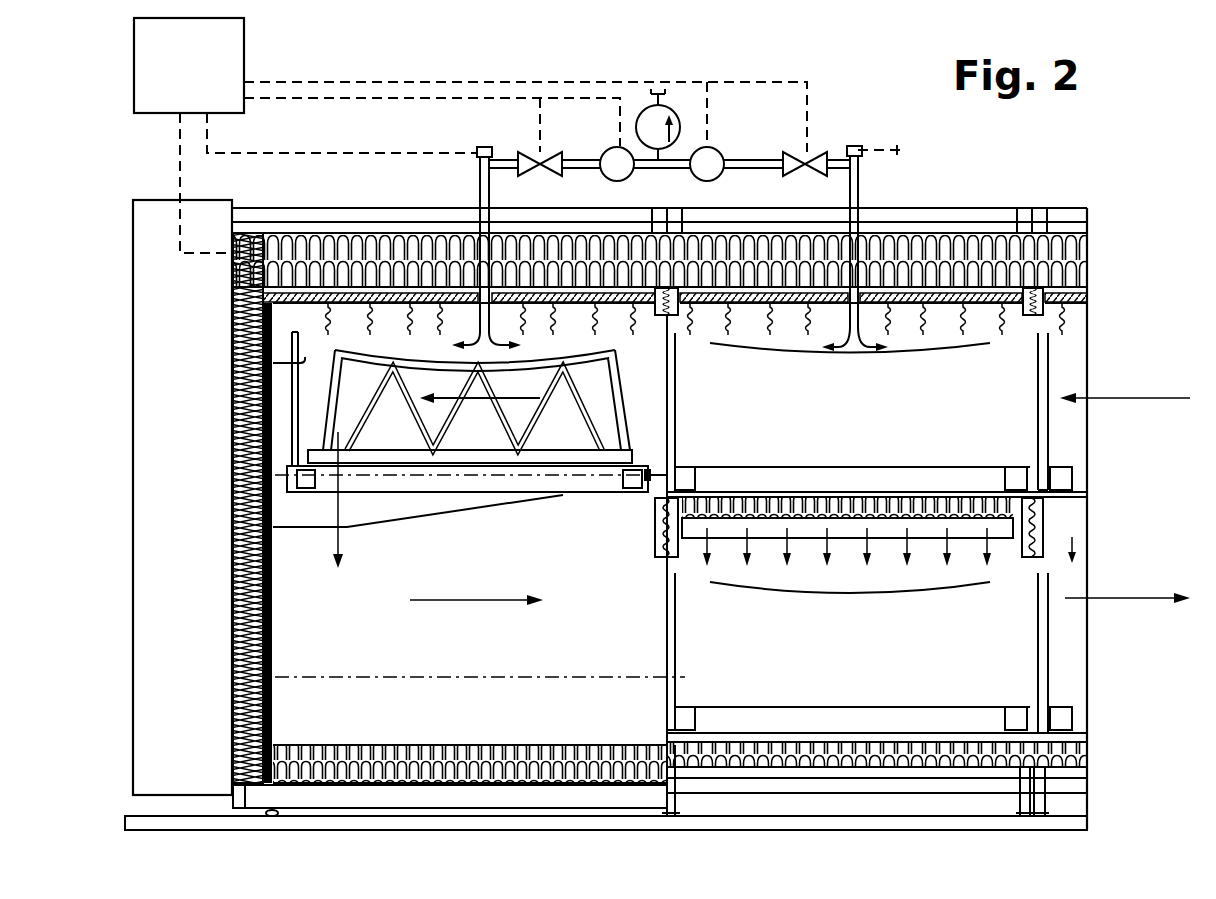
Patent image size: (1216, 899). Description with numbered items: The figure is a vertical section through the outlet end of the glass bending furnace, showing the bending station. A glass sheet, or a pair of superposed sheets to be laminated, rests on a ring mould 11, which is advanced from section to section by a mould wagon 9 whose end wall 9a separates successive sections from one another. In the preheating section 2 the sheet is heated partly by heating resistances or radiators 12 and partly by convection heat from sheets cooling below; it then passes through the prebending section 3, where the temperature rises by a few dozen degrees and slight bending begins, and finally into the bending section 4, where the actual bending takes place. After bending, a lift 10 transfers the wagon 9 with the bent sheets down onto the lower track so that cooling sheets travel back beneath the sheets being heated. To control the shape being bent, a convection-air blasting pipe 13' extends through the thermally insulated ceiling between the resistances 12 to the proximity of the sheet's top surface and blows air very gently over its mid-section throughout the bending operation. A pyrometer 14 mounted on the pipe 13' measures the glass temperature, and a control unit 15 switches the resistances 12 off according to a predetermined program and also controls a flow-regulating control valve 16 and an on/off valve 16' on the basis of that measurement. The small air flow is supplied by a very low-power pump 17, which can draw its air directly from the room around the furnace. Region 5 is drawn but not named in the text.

The preheating section 2 is at (1075, 333).
The prebending section 3 is at (978, 305).
The bending section 4 is at (232, 356).
The lower chamber 5 is at (874, 665).
The mould wagon 9 is at (470, 490).
The end wall 9a is at (678, 391).
The lift 10 is at (405, 513).
The ring mould 11 is at (366, 362).
The heating resistances 12 is at (357, 270).
The convection-air blasting pipe 13' is at (675, 252).
The pyrometer 14 is at (477, 160).
The control unit 15 is at (231, 47).
The control valve 16 is at (672, 144).
The on/off valve 16' is at (662, 175).
The pump 17 is at (676, 122).